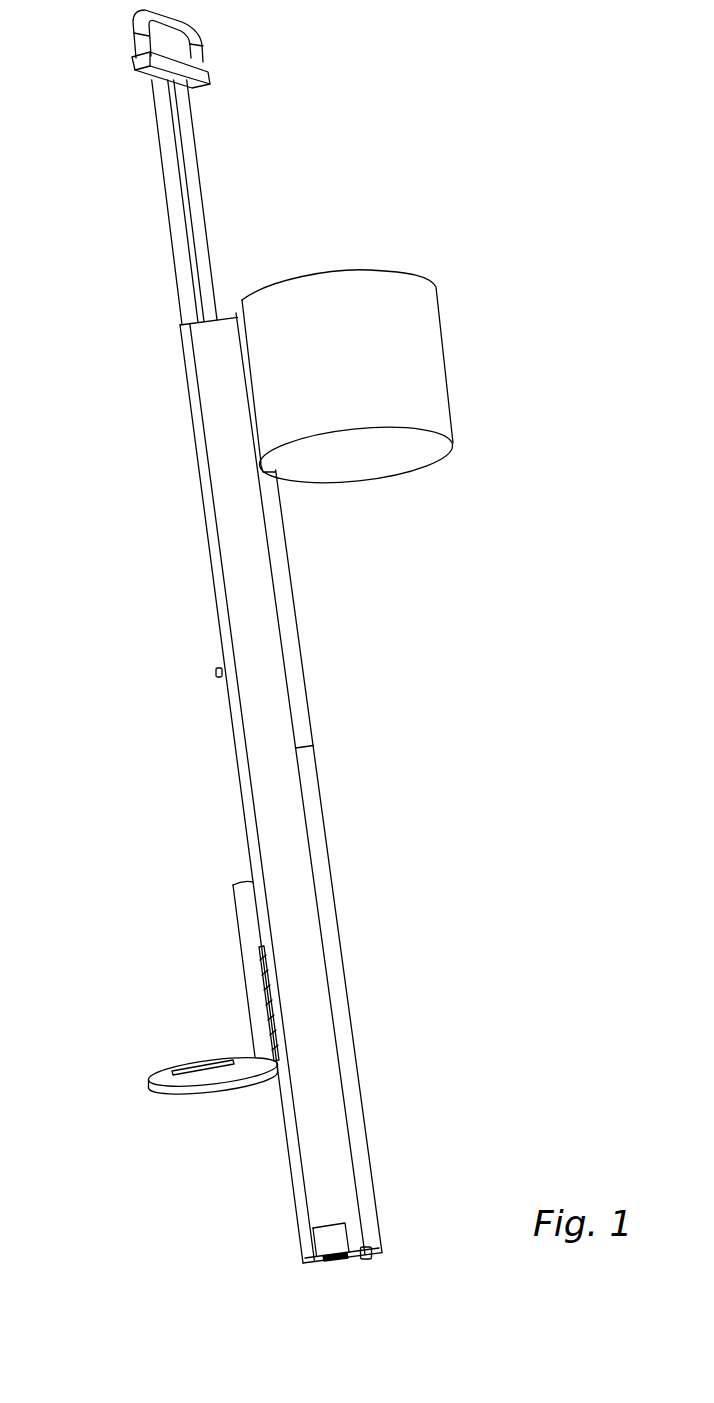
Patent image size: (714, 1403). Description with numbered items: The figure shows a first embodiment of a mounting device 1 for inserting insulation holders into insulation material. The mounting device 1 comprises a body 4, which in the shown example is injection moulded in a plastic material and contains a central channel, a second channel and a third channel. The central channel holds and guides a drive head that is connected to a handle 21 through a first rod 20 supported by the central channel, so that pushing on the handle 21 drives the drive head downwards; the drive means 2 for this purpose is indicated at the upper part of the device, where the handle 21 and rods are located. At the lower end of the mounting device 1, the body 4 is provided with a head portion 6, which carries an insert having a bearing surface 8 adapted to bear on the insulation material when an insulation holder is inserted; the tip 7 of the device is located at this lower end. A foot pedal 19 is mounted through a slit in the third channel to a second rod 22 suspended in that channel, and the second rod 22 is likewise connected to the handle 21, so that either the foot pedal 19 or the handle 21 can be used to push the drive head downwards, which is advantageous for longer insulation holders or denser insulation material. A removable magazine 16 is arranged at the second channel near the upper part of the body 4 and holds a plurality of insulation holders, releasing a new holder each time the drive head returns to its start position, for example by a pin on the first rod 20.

The mounting device 1 is at (400, 95).
The drive means 2 is at (250, 96).
The body 4 is at (266, 680).
The head portion 6 is at (418, 1204).
The tip 7 is at (362, 1272).
The bearing surface 8 is at (306, 1268).
The magazine 16 is at (434, 402).
The foot pedal 19 is at (183, 1086).
The first rod 20 is at (203, 250).
The handle 21 is at (201, 40).
The second rod 22 is at (185, 260).